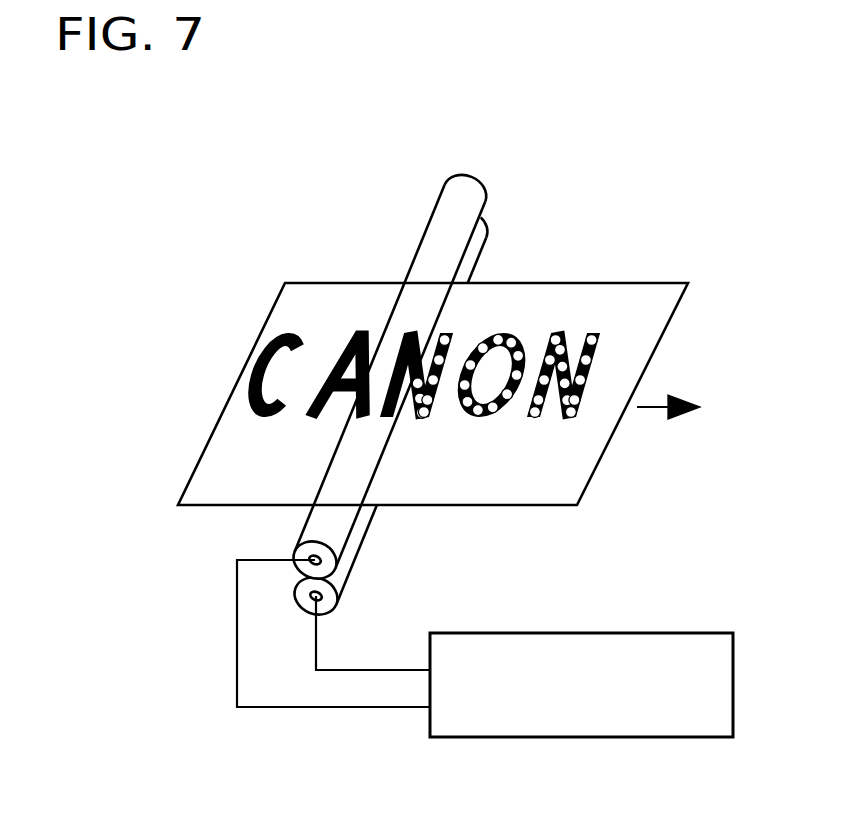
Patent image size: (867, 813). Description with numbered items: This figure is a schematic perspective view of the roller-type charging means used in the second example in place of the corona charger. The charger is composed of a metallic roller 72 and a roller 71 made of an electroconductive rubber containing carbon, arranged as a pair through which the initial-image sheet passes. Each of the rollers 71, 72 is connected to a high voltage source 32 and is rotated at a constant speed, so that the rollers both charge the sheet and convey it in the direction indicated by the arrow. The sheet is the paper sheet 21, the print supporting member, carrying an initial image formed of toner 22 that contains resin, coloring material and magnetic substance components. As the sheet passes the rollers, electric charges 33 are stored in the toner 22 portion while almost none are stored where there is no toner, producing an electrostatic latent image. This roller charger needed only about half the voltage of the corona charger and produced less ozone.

The roller 71 is at (438, 194).
The metallic roller 72 is at (487, 237).
The paper sheet 21 is at (521, 281).
The toner 22 is at (262, 362).
The electric charges 33 is at (590, 335).
The high voltage source 32 is at (559, 706).